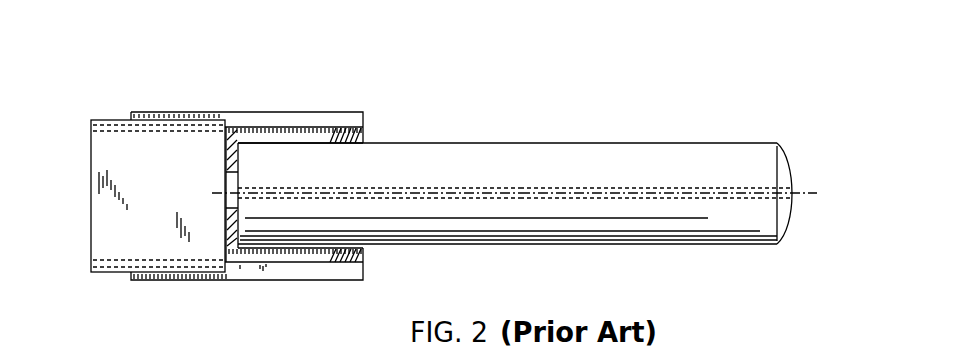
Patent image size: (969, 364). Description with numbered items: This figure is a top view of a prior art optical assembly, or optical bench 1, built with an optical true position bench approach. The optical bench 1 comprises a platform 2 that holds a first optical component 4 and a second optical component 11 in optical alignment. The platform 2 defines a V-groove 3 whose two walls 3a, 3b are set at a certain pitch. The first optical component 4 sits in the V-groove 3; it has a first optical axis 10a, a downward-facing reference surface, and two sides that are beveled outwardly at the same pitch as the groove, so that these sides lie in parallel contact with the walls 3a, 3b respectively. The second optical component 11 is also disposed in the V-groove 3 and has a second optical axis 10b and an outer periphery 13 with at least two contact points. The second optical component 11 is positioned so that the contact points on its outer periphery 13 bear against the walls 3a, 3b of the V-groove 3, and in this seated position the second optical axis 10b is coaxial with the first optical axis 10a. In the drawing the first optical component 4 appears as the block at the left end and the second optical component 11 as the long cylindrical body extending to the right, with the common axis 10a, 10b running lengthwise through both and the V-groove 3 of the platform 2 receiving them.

The optical bench 1 is at (612, 71).
The platform 2 is at (341, 281).
The V-groove 3 is at (313, 202).
The wall of V-groove 3a is at (362, 253).
The wall of V-groove 3b is at (365, 137).
The first optical component 4 is at (104, 109).
The first optical axis 10a is at (232, 196).
The second optical axis 10b is at (810, 192).
The second optical component 11 is at (523, 143).
The outer periphery 13 is at (713, 140).